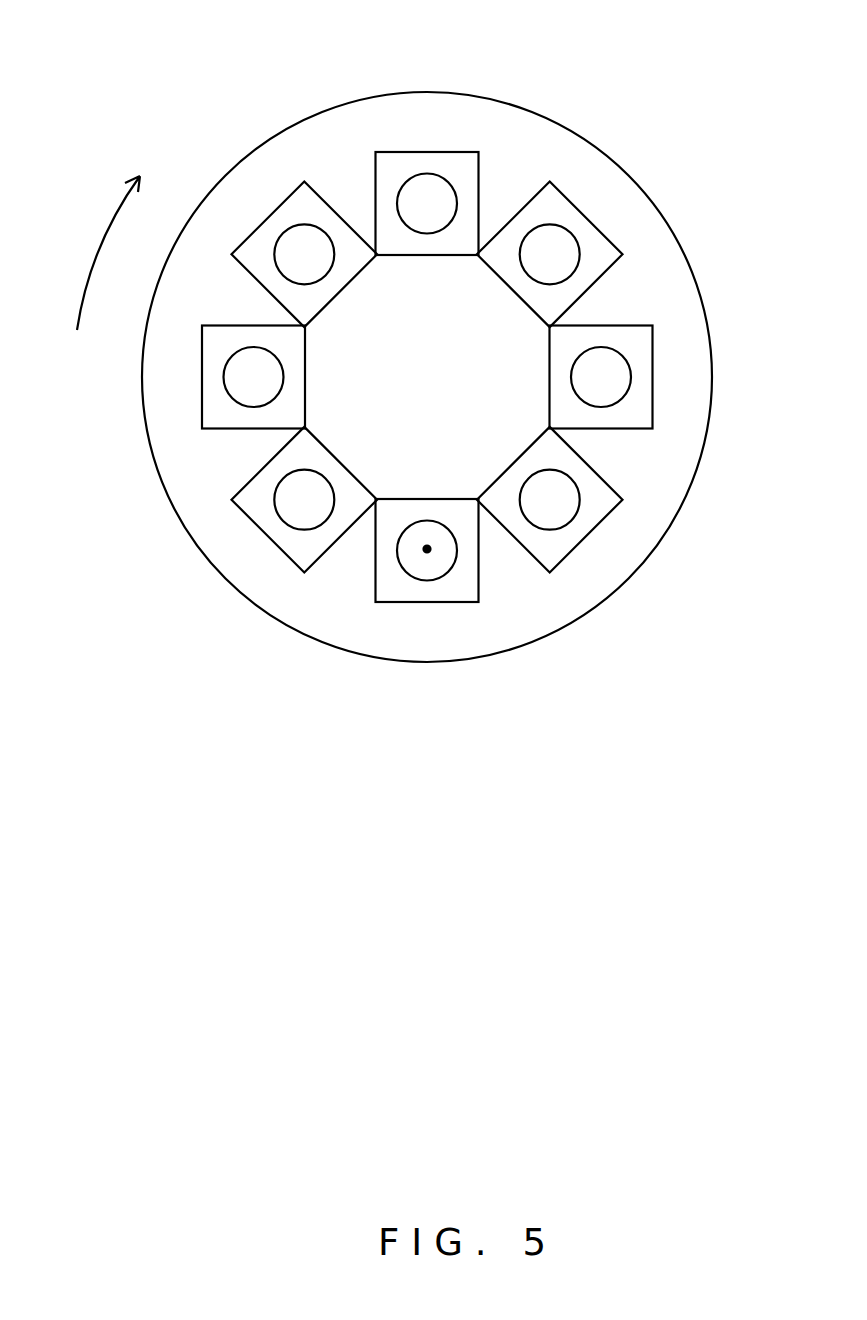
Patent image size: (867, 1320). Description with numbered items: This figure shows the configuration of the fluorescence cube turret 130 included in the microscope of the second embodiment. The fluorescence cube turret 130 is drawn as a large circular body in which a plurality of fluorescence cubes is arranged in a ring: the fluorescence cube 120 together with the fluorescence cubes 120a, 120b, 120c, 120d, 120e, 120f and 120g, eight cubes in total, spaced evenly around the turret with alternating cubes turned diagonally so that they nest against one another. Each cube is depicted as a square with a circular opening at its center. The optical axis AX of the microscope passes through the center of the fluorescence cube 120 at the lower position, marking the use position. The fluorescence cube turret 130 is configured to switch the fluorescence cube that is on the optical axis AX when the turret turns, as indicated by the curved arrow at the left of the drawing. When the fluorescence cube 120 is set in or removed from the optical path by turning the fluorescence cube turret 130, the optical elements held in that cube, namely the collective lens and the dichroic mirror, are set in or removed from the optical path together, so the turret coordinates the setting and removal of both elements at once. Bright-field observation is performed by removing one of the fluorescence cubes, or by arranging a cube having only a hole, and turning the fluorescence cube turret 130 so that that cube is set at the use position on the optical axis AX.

The fluorescence cube turret 130 is at (588, 138).
The fluorescence cube 120 is at (375, 572).
The fluorescence cube 120a is at (240, 492).
The fluorescence cube 120b is at (202, 360).
The fluorescence cube 120c is at (273, 213).
The fluorescence cube 120d is at (415, 152).
The fluorescence cube 120e is at (585, 213).
The fluorescence cube 120f is at (653, 373).
The fluorescence cube 120g is at (593, 468).
The optical axis AX is at (427, 549).